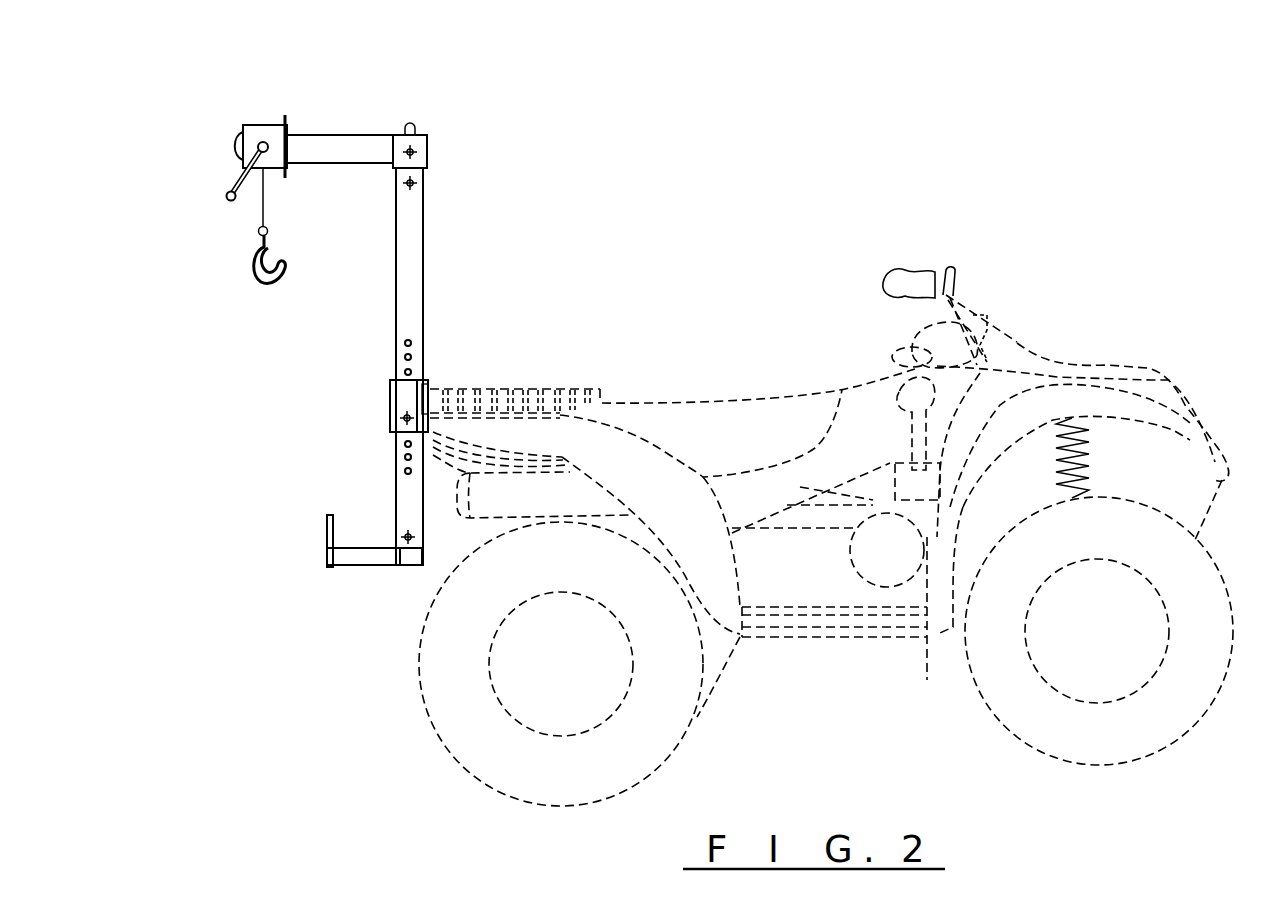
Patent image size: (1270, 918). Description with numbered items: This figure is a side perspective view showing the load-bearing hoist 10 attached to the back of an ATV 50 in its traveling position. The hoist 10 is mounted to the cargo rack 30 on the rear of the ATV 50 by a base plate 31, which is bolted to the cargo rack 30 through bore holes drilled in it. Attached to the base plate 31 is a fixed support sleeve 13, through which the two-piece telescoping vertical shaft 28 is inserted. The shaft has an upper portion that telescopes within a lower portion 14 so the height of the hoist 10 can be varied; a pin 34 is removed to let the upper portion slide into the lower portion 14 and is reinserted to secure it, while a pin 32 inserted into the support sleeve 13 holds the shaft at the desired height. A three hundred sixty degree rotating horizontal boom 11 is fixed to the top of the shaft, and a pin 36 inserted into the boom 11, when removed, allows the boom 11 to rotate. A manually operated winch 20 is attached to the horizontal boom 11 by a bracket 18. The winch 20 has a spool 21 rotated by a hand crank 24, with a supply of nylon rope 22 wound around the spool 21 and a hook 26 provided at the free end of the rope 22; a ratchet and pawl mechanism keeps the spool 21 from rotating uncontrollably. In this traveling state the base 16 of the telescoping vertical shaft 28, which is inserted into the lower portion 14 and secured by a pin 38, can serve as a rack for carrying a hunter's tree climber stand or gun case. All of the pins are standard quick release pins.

The load-bearing hoist 10 is at (428, 109).
The 360 degree rotating horizontal boom 11 is at (355, 163).
The fixed support sleeve 13 is at (398, 395).
The lower portion 14 is at (395, 460).
The base 16 is at (360, 567).
The bracket 18 is at (285, 121).
The manually operated winch 20 is at (232, 112).
The spool 21 is at (243, 141).
The nylon rope 22 is at (265, 203).
The hand crank 24 is at (230, 174).
The hook 26 is at (253, 268).
The two-piece telescoping vertical shaft 28 is at (458, 272).
The cargo rack 30 is at (428, 388).
The base plate 31 is at (423, 380).
The pin 32 is at (398, 417).
The pin 34 is at (428, 179).
The pin 36 is at (430, 152).
The pin 38 is at (395, 537).
The ATV 50 is at (723, 345).